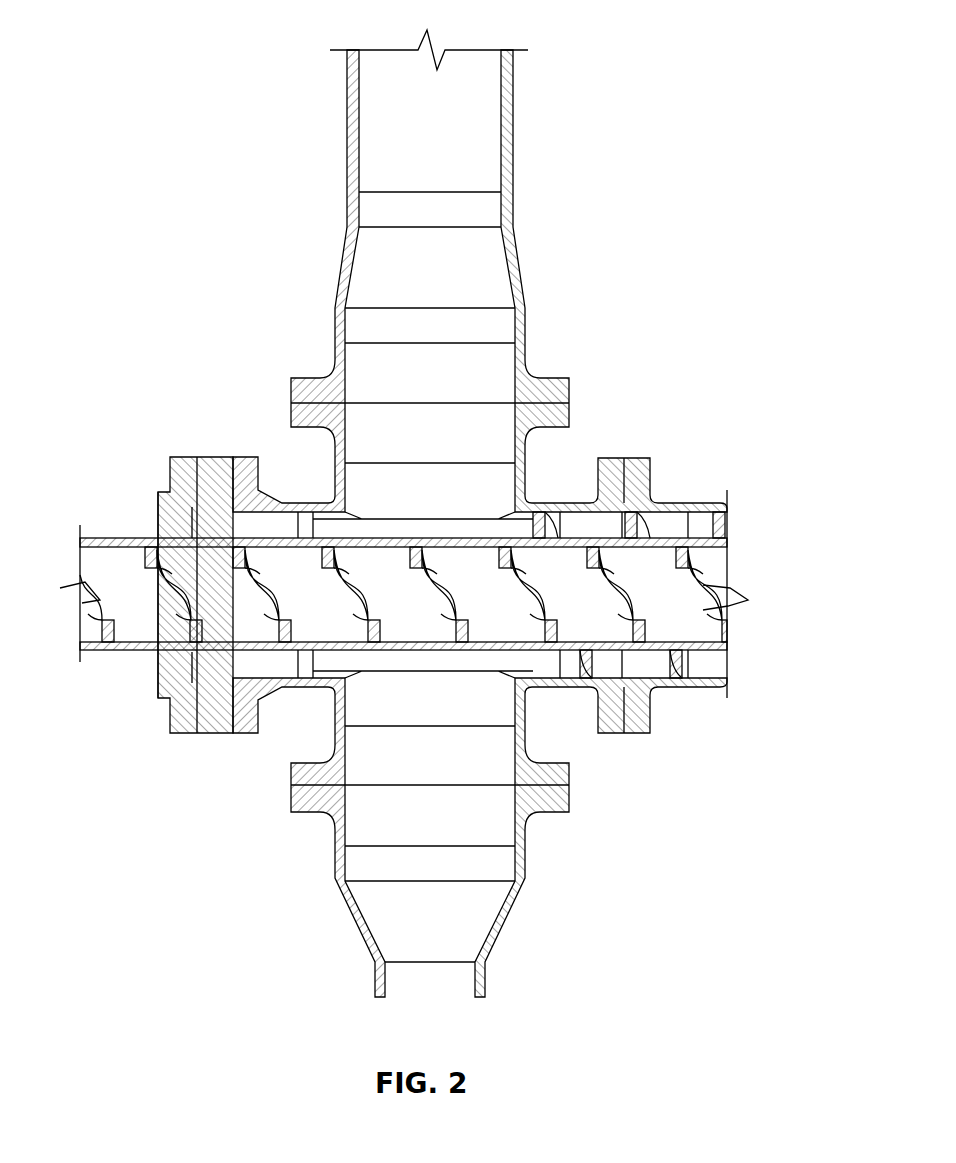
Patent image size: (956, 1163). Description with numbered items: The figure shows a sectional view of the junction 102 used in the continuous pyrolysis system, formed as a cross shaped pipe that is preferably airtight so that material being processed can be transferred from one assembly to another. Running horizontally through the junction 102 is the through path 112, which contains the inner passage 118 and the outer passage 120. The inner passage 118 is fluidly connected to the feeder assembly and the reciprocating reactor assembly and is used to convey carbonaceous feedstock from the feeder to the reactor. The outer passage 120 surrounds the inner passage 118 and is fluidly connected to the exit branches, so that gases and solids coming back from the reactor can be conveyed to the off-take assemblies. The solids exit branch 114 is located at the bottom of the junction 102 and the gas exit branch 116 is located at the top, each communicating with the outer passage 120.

The junction 102 is at (143, 124).
The through path 112 is at (704, 492).
The solids exit branch 114 is at (336, 712).
The gas exit branch 116 is at (336, 476).
The inner passage 118 is at (727, 643).
The outer passage 120 is at (727, 507).